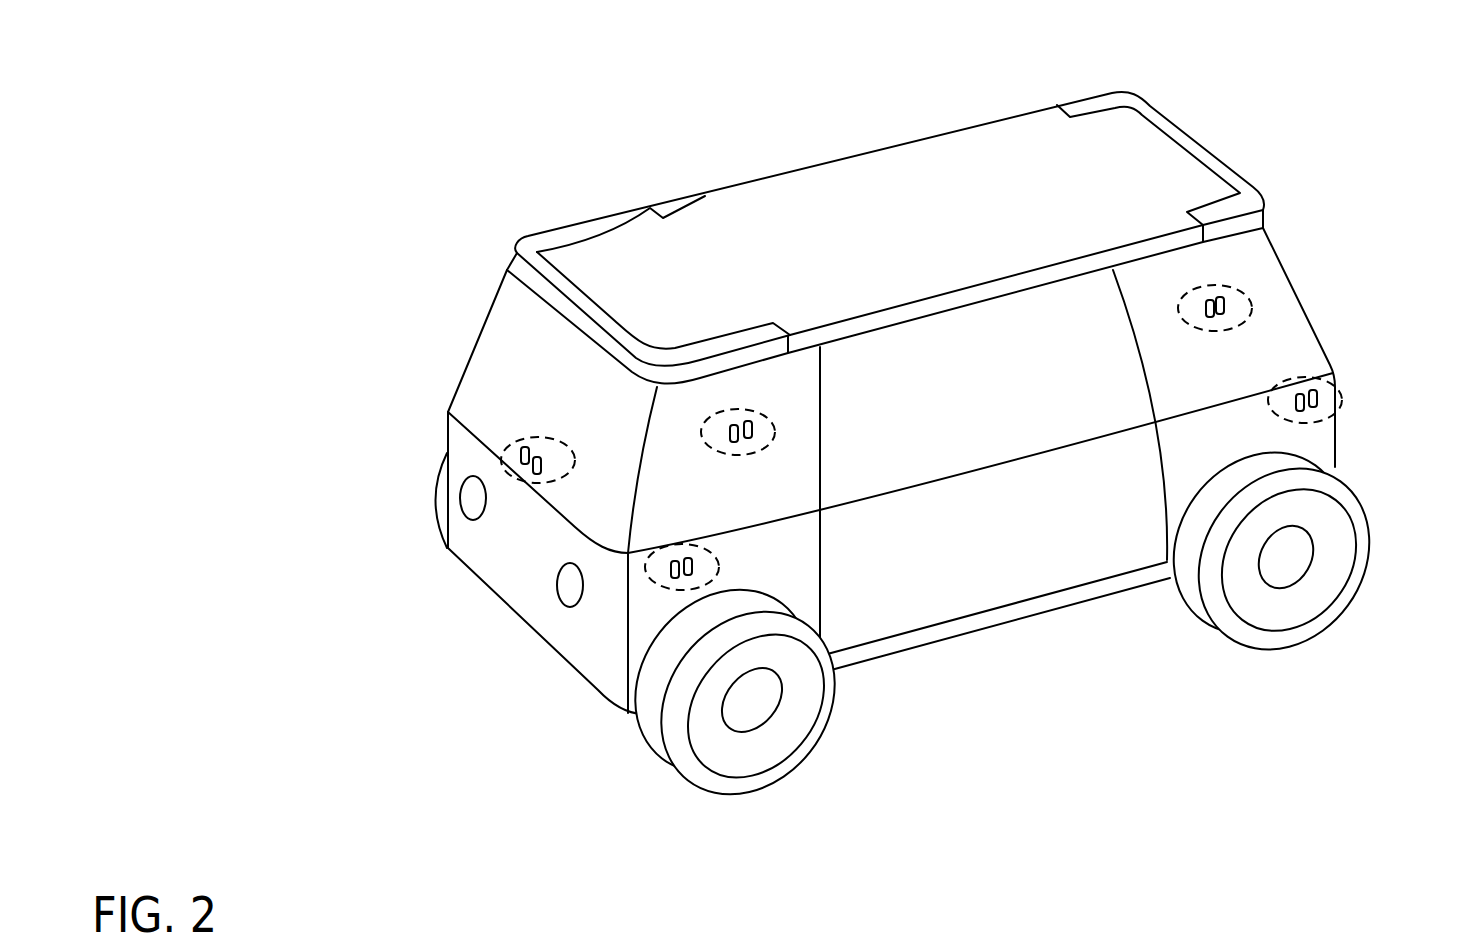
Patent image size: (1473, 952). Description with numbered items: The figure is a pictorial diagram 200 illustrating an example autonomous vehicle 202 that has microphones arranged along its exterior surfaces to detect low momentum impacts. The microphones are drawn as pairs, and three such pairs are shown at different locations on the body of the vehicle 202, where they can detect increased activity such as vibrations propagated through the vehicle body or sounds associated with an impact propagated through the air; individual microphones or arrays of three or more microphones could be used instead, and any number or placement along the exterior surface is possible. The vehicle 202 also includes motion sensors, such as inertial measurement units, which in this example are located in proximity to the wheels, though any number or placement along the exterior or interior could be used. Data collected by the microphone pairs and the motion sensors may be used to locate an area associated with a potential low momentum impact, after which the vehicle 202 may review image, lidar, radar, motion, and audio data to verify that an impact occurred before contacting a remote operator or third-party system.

The pictorial diagram 200 is at (215, 73).
The autonomous vehicle 202 is at (797, 118).